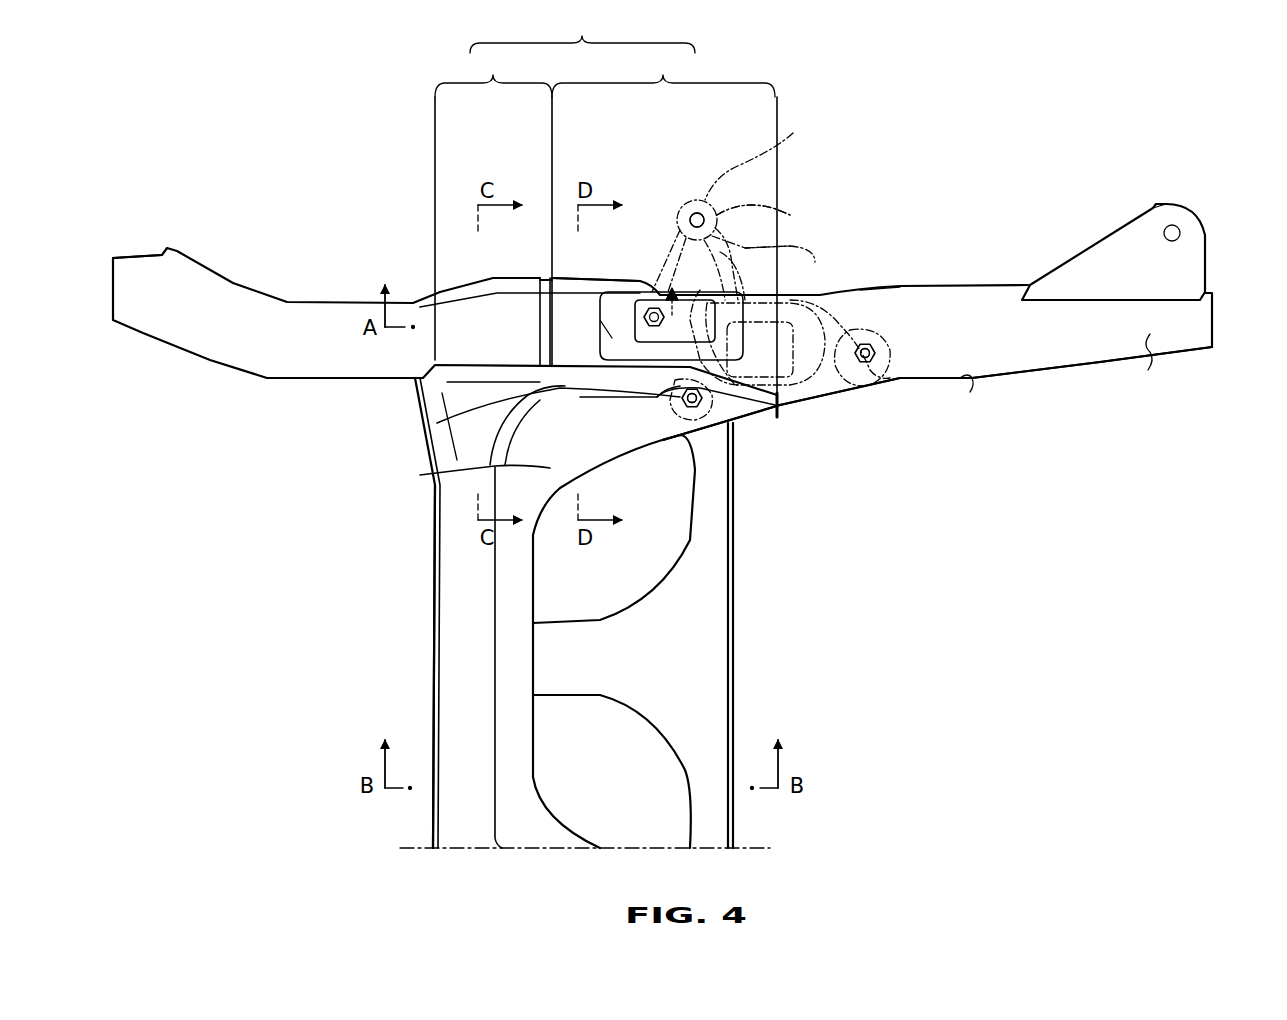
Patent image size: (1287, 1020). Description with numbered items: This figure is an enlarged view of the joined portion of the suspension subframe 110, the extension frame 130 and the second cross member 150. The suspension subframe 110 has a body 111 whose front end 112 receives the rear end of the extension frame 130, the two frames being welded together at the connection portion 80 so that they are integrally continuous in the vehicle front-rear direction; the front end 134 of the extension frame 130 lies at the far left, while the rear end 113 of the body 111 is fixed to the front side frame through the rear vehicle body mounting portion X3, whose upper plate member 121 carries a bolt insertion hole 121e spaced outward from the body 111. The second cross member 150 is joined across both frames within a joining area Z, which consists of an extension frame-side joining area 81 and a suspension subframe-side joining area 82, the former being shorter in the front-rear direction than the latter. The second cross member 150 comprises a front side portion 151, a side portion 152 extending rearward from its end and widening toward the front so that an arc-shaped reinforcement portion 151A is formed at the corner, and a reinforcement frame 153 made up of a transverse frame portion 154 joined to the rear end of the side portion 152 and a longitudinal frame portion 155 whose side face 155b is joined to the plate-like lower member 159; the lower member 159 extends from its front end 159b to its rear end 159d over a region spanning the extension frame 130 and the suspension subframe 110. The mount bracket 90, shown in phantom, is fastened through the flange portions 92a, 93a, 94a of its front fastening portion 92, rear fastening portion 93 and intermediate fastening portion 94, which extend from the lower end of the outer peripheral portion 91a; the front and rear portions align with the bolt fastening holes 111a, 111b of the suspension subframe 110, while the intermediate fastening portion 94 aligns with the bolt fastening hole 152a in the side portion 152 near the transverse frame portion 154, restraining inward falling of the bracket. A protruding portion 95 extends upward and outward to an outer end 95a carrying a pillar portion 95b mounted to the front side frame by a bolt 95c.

The extension frame 130 is at (243, 298).
The front end of extension frame 134 is at (130, 262).
The suspension subframe 110 is at (944, 283).
The body 111 is at (962, 378).
The bolt fastening hole 111a is at (630, 292).
The bolt fastening hole 111b is at (893, 290).
The front end 112 is at (562, 277).
The rear end 113 is at (1150, 360).
The upper plate member 121 is at (1183, 258).
The bolt insertion hole 121e is at (1175, 222).
The rear vehicle body mounting portion X3 is at (1122, 215).
The joining area Z is at (582, 31).
The extension frame-side joining area 81 is at (493, 205).
The suspension subframe-side joining area 82 is at (664, 234).
The connection portion 80 is at (546, 273).
The mount bracket 90 is at (752, 236).
The outer peripheral portion 91a is at (806, 272).
The front fastening portion 92 is at (690, 206).
The flange portion 92a is at (669, 194).
The rear fastening portion 93 is at (866, 376).
The flange portion 93a is at (865, 353).
The intermediate fastening portion 94 is at (757, 427).
The flange portion 94a is at (692, 398).
The protruding portion 95 is at (762, 203).
The outer end 95a is at (748, 250).
The pillar portion 95b is at (795, 132).
The bolt 95c is at (735, 212).
The second cross member 150 is at (572, 613).
The front side portion 151 is at (452, 618).
The reinforcement portion 151A is at (450, 468).
The side portion 152 is at (440, 415).
The bolt fastening hole 152a is at (690, 410).
The reinforcement frame 153 is at (764, 635).
The transverse frame portion 154 is at (722, 570).
The longitudinal frame portion 155 is at (614, 641).
The side face 155b is at (568, 620).
The lower member 159 is at (645, 822).
The front end 159b is at (436, 512).
The rear end 159d is at (735, 683).